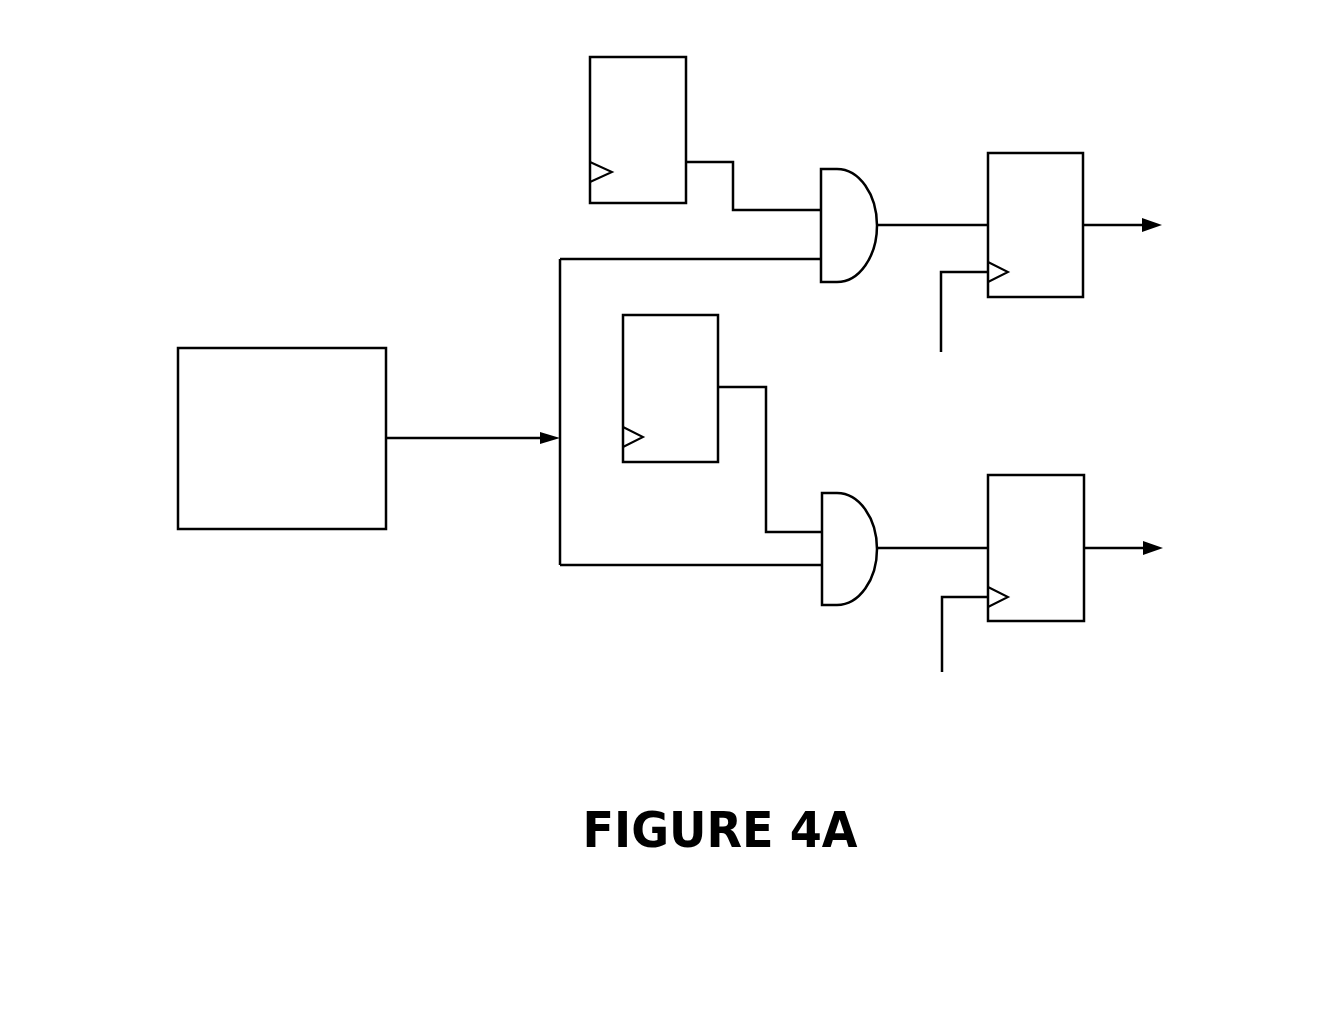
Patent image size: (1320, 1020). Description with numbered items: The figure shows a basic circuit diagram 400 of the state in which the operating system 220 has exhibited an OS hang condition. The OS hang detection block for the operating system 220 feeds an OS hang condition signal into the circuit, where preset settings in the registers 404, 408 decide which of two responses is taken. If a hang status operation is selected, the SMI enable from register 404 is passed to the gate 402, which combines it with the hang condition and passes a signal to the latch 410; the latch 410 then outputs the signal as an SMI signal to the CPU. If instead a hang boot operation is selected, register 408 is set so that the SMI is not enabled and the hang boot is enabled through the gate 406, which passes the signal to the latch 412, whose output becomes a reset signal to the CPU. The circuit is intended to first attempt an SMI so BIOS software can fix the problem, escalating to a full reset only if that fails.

The basic circuit diagram 400 is at (214, 63).
The operating system 220 is at (263, 474).
The register 404 is at (619, 156).
The gate 402 is at (827, 236).
The latch 410 is at (1018, 236).
The register 408 is at (653, 412).
The gate 406 is at (831, 559).
The latch 412 is at (1018, 559).